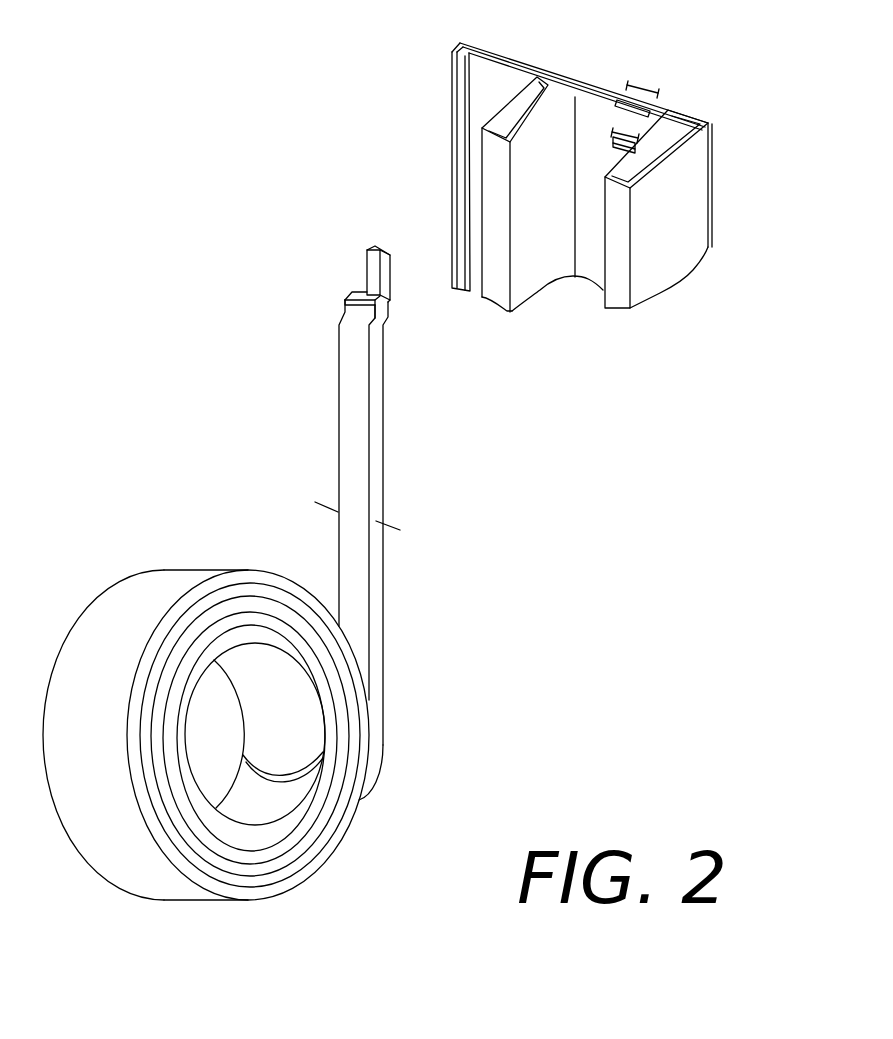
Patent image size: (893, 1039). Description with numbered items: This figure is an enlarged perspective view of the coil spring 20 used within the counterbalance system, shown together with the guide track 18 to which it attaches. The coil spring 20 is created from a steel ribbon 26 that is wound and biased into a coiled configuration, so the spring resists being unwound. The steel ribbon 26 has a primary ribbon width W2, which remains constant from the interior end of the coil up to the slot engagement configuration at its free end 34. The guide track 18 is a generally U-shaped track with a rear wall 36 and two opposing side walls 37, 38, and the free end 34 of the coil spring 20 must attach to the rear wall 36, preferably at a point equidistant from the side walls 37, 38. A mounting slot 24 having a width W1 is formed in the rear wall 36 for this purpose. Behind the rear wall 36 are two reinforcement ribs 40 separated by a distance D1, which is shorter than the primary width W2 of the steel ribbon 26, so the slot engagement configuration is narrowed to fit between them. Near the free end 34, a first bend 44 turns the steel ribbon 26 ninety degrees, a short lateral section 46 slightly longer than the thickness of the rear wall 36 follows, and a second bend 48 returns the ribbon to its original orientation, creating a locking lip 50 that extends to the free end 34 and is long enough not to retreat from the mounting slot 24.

The guide track 18 is at (614, 194).
The coil spring 20 is at (185, 580).
The mounting slot 24 is at (613, 143).
The steel ribbon 26 is at (367, 485).
The free end 34 is at (345, 235).
The rear wall 36 is at (597, 113).
The side wall 37 is at (537, 284).
The side wall 38 is at (603, 277).
The reinforcement rib 40 is at (614, 98).
The first bend 44 is at (358, 303).
The lateral section 46 is at (385, 310).
The second bend 48 is at (387, 307).
The locking lip 50 is at (370, 276).
The distance between reinforcement ribs D1 is at (658, 92).
The mounting slot width W1 is at (640, 130).
The primary ribbon width W2 is at (383, 525).